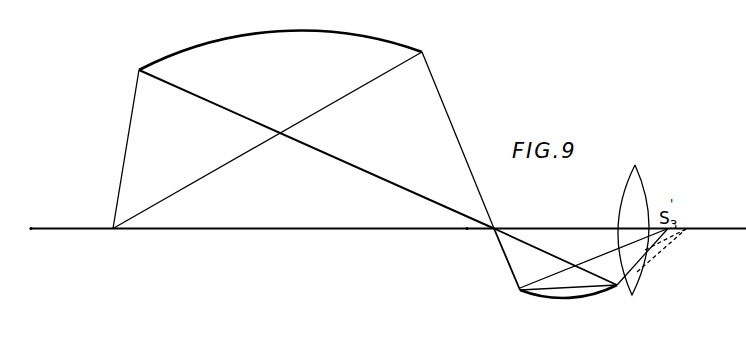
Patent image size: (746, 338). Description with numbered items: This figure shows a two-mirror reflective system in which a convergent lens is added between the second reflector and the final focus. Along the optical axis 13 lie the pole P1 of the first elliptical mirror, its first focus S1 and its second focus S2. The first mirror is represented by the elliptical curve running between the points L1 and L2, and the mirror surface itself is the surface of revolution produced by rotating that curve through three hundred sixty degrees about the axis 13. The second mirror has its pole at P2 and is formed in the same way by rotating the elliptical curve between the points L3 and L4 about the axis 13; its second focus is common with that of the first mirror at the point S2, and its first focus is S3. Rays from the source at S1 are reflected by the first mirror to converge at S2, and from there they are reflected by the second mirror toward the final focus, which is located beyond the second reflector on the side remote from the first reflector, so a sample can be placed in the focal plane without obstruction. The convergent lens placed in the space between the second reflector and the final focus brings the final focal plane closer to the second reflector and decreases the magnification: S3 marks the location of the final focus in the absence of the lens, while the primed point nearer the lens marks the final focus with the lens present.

The optical axis 13 is at (263, 229).
The pole of the first elliptical mirror P1 is at (38, 243).
The pole of the second mirror P2 is at (467, 243).
The first end point of the first mirror elliptical curve L1 is at (268, 51).
The second end point of the first mirror elliptical curve L2 is at (458, 135).
The first focus of the first elliptical mirror S1 is at (263, 156).
The second focus of the first mirror S2 is at (378, 177).
The first end point of the second mirror elliptical curve L3 is at (594, 272).
The second end point of the second mirror elliptical curve L4 is at (581, 272).
The first focus of the second mirror S3 is at (668, 240).